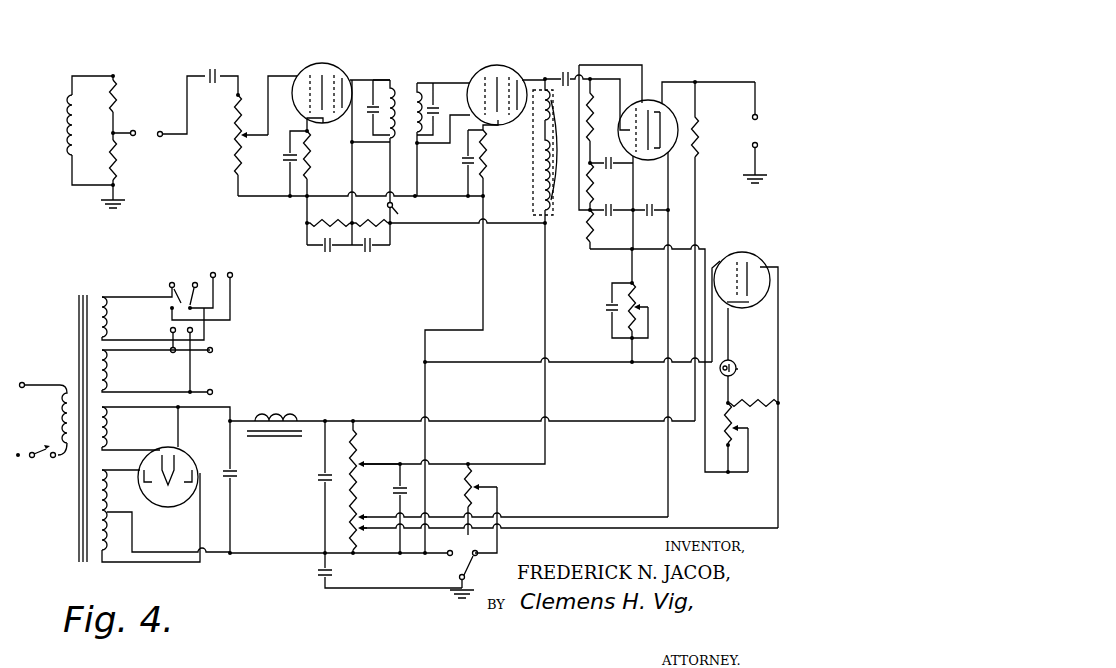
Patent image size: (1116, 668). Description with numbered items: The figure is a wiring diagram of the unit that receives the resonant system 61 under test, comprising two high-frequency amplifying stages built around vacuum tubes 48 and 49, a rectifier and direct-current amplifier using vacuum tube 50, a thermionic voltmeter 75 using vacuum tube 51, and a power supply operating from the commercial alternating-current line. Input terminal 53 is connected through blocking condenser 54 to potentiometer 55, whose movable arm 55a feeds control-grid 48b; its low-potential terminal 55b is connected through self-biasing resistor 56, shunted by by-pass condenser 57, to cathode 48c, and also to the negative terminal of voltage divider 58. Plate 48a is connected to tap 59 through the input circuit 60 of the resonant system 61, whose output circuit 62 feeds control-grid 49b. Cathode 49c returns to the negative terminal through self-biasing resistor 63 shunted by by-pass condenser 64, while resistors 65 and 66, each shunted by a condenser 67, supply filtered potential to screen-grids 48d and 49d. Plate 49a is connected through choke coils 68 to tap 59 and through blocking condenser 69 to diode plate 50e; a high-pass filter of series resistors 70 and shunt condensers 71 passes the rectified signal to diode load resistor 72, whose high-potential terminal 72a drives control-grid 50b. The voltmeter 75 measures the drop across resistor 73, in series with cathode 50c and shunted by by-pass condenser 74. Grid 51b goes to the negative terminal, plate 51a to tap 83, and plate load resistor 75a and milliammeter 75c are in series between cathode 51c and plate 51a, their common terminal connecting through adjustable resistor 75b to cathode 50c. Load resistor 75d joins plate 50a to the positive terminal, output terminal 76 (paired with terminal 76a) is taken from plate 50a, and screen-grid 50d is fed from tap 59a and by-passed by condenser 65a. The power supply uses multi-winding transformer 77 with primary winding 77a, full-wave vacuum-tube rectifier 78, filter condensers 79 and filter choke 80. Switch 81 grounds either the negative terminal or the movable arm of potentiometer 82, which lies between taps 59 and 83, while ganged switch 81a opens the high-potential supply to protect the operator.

The vacuum tube 48 is at (295, 110).
The plate 48a is at (343, 78).
The control-grid 48b is at (308, 74).
The cathode 48c is at (356, 140).
The screen-grid 48d is at (324, 68).
The vacuum tube 49 is at (503, 65).
The plate 49a is at (524, 81).
The control-grid 49b is at (488, 72).
The cathode 49c is at (498, 126).
The screen-grid 49d is at (512, 76).
The vacuum tube 50 is at (643, 102).
The plate 50a is at (666, 83).
The control-grid 50b is at (652, 118).
The cathode 50c is at (628, 132).
The screen-grid 50d is at (662, 112).
The diode plate 50e is at (641, 160).
The vacuum tube 51 is at (765, 299).
The plate 51a is at (772, 264).
The grid 51b is at (713, 266).
The cathode 51c is at (731, 312).
The input terminal 53 is at (176, 118).
The blocking condenser 54 is at (226, 75).
The potentiometer 55 is at (226, 118).
The movable arm 55a is at (269, 117).
The low-potential terminal 55b is at (221, 169).
The self-biasing resistor 56 is at (321, 158).
The by-pass condenser 57 is at (285, 164).
The voltage divider 58 is at (352, 511).
The tap 59 is at (376, 465).
The tap 59a is at (368, 516).
The input circuit 60 is at (372, 107).
The resonant system 61 is at (402, 141).
The output circuit 62 is at (442, 139).
The self-biasing resistor 63 is at (493, 164).
The by-pass condenser 64 is at (462, 164).
The resistor 65 is at (329, 215).
The condenser 65a is at (630, 222).
The resistor 66 is at (372, 215).
The condenser 67 is at (365, 252).
The choke coils 68 is at (553, 152).
The blocking condenser 69 is at (576, 70).
The series resistors 70 is at (601, 144).
The shunt condensers 71 is at (611, 175).
The diode load resistor 72 is at (601, 229).
The high-potential terminal 72a is at (579, 221).
The resistor 73 is at (643, 305).
The by-pass condenser 74 is at (614, 310).
The thermionic voltmeter 75 is at (739, 371).
The plate load resistor 75a is at (753, 392).
The adjustable resistor 75b is at (750, 433).
The milliammeter 75c is at (752, 367).
The load resistor 75d is at (714, 251).
The output terminal 76 is at (767, 101).
The terminal 76a is at (766, 161).
The multi-winding transformer 77 is at (78, 508).
The primary winding 77a is at (41, 420).
The full-wave vacuum-tube rectifier 78 is at (190, 450).
The filter condensers 79 is at (342, 504).
The filter choke 80 is at (274, 412).
The switch 81 is at (474, 575).
The switch 81a is at (399, 213).
The potentiometer 82 is at (468, 507).
The tap 83 is at (365, 540).